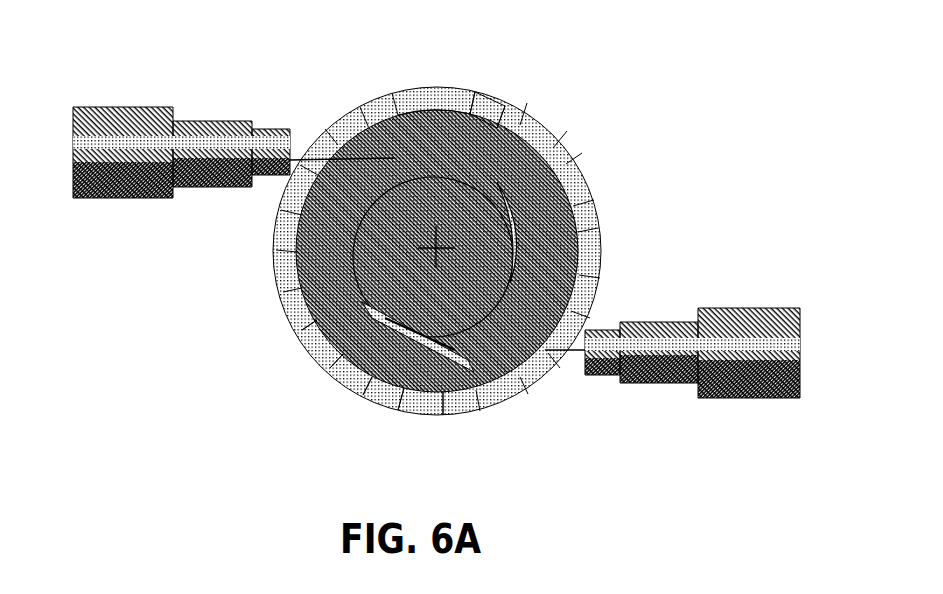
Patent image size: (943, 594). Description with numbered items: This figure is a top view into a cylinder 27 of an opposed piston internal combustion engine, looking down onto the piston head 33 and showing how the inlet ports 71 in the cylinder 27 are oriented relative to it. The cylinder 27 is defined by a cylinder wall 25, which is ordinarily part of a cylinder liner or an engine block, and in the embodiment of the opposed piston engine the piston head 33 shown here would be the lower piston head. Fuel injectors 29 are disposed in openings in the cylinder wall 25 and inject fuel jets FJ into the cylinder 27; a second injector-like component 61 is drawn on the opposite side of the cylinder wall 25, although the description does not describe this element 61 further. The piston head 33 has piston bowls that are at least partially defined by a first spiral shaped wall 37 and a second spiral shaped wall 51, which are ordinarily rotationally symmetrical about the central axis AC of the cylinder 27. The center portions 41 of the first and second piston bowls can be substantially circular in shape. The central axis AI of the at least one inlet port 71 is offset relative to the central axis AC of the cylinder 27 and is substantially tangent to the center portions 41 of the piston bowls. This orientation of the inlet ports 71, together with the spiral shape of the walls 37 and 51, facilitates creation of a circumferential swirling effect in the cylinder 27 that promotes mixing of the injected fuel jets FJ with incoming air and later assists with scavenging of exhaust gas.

The cylinder wall 25 is at (565, 151).
The cylinder 27 is at (503, 123).
The fuel injector 29 is at (190, 124).
The piston head 33 is at (433, 136).
The first spiral shaped wall 37 is at (512, 242).
The center portions of the piston bowls 41 is at (403, 258).
The second spiral shaped wall 51 is at (405, 328).
The second optical connector 61 is at (645, 388).
The inlet port 71 is at (433, 413).
The fuel jets FJ is at (390, 140).
The central axis of the cylinder AC is at (440, 252).
The central axis of the inlet port AI is at (527, 400).